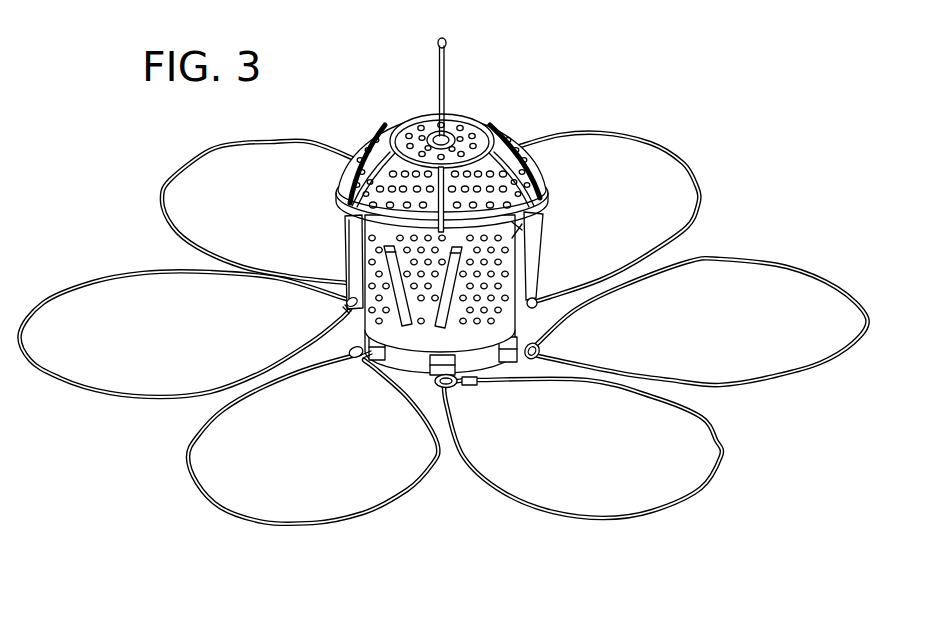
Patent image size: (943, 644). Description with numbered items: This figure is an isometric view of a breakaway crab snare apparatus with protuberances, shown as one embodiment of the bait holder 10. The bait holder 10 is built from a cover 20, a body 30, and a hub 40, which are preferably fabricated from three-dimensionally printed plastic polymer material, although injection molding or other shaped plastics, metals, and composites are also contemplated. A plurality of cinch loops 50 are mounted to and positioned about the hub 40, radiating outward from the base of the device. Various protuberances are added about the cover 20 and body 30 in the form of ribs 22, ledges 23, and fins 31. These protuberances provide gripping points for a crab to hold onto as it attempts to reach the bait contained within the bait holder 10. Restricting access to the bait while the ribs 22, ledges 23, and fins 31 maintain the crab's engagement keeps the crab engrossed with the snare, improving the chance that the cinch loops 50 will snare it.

The bait holder 10 is at (288, 205).
The cover 20 is at (410, 130).
The ribs 22 is at (512, 142).
The ledges 23 is at (536, 184).
The body 30 is at (417, 340).
The fins 31 is at (533, 244).
The hub 40 is at (484, 357).
The cinch loops 50 is at (748, 262).